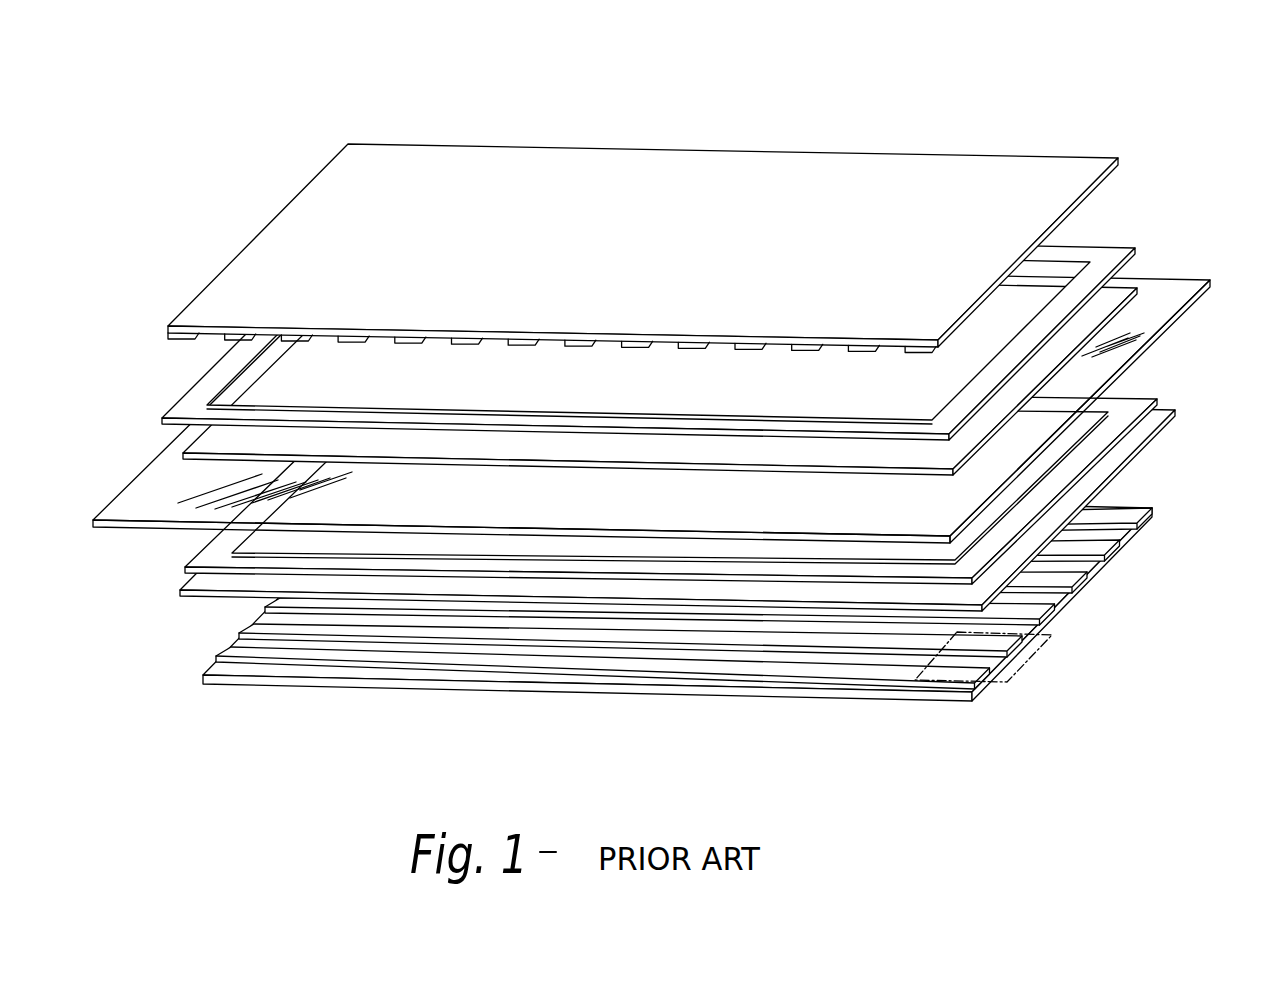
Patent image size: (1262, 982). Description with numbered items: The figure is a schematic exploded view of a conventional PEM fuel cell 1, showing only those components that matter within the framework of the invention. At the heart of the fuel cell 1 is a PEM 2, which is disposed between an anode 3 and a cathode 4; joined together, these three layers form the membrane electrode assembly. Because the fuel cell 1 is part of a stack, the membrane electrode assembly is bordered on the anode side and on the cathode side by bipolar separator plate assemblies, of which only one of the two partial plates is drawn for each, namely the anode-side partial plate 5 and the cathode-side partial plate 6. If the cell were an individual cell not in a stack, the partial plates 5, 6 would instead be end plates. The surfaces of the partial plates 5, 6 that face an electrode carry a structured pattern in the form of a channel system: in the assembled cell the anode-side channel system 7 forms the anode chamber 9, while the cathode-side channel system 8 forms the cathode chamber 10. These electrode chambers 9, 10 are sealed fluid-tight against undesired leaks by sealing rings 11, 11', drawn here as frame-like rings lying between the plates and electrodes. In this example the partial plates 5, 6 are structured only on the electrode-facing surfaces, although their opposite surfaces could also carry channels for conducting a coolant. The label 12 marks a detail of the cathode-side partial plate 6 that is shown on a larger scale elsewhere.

The fuel cell 1 is at (668, 396).
The PEM 2 is at (1160, 308).
The anode 3 is at (1110, 298).
The cathode 4 is at (1128, 404).
The anode-side partial plate 5 is at (962, 177).
The cathode-side partial plate 6 is at (597, 682).
The anode-side channel system 7 is at (529, 361).
The anode chamber 9 is at (320, 348).
The cathode-side channel system 8 is at (645, 598).
The cathode chamber 10 is at (268, 653).
The sealing ring 11 is at (664, 312).
The sealing ring 11' is at (705, 503).
The detail 12 is at (1044, 651).